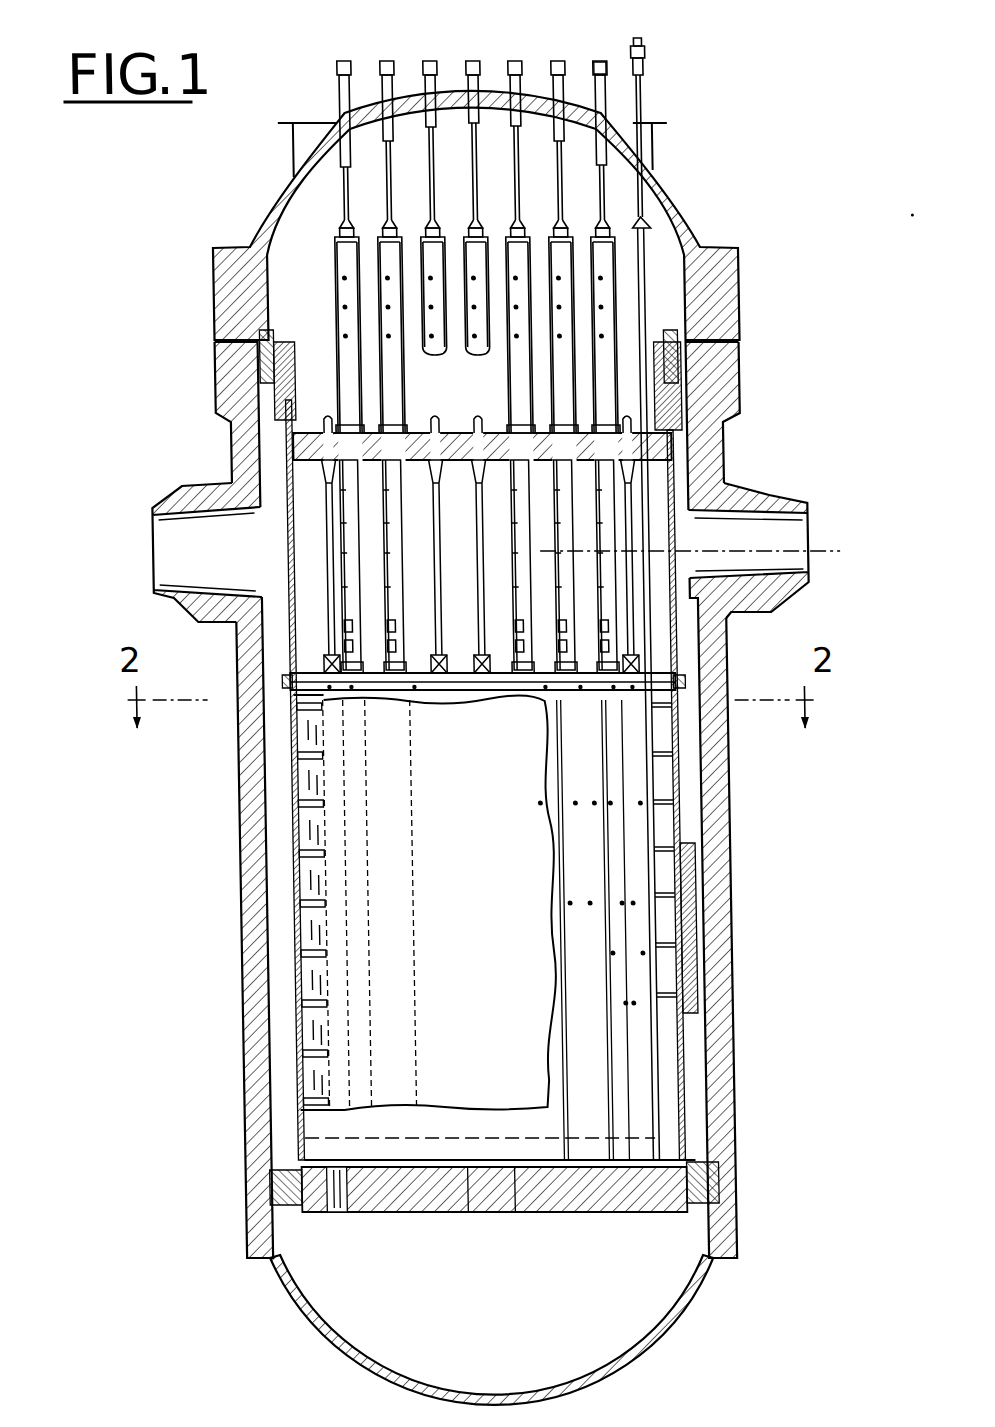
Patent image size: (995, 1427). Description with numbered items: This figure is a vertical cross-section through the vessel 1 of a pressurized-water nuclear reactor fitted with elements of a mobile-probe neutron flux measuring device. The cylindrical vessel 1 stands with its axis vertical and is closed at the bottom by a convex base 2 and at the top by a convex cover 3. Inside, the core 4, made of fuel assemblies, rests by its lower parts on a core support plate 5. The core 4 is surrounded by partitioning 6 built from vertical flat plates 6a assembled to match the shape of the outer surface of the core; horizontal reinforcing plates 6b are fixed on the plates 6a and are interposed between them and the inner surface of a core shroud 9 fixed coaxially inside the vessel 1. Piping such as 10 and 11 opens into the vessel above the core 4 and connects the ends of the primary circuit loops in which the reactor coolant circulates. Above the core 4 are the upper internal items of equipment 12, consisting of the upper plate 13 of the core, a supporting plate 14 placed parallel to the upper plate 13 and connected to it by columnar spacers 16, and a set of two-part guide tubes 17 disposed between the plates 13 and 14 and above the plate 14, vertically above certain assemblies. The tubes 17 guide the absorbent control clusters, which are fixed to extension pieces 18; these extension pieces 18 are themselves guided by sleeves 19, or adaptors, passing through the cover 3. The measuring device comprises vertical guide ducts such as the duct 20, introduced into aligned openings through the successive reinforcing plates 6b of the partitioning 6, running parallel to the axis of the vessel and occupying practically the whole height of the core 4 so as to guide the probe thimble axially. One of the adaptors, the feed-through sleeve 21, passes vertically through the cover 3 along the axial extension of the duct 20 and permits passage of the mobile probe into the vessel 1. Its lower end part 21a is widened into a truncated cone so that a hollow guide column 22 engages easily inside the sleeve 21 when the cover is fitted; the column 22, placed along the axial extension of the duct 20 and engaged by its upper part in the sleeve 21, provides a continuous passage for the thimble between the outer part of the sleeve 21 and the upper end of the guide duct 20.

The vessel 1 is at (703, 930).
The convex base 2 is at (658, 1308).
The cover of the vessel 3 is at (656, 190).
The core 4 is at (426, 902).
The core support plate 5 is at (627, 1195).
The partitioning 6 is at (617, 833).
The vertical flat plates 6a is at (625, 1147).
The horizontal reinforcing plates 6b is at (668, 785).
The core shroud 9 is at (277, 877).
The piping 10 is at (189, 505).
The piping 11 is at (751, 500).
The upper internal items of equipment 12 is at (609, 503).
The upper plate of the core 13 is at (303, 667).
The supporting plate 14 is at (309, 430).
The columnar spacers 16 is at (428, 540).
The guide tubes 17 is at (608, 292).
The extension pieces 18 is at (599, 182).
The sleeves 19 is at (481, 86).
The guide duct 20 is at (644, 974).
The feed-through sleeve 21 is at (644, 153).
The lower end part 21a is at (654, 221).
The hollow guide column 22 is at (642, 560).